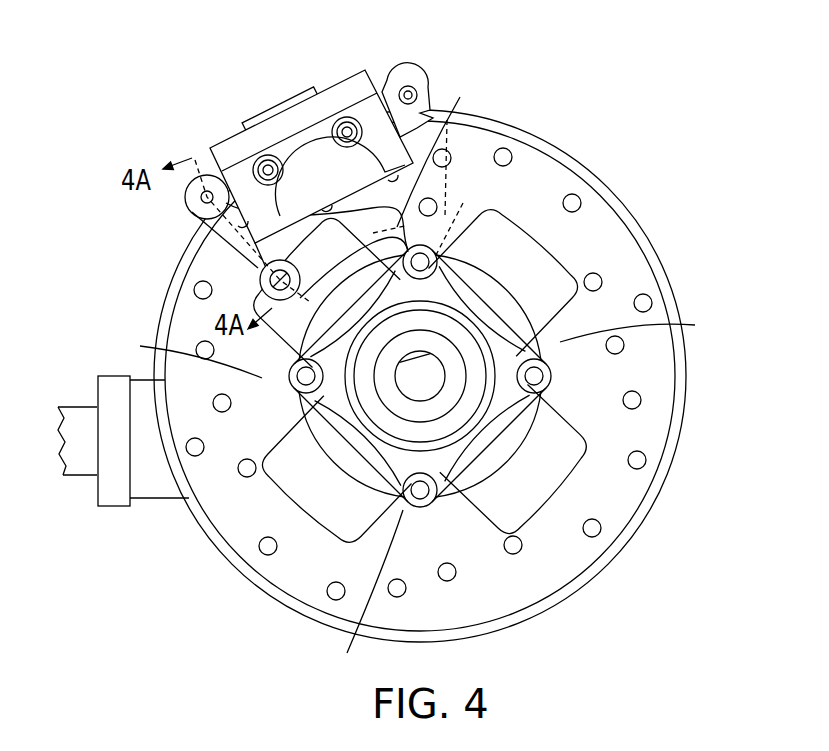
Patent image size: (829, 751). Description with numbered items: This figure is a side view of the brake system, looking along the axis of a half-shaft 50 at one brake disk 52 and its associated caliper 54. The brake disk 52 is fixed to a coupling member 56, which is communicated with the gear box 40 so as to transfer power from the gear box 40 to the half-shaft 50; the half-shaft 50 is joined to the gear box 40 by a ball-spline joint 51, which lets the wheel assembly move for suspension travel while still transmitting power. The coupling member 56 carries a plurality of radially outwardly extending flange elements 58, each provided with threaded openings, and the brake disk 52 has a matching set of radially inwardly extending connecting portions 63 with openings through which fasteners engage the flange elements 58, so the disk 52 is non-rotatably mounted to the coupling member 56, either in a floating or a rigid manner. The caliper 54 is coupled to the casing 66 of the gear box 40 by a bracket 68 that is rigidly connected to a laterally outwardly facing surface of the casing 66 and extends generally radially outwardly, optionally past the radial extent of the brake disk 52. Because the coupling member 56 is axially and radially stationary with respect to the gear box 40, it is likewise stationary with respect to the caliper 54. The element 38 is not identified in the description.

The swing arm / axle support 38 is at (83, 423).
The gear box 40 is at (573, 160).
The half-shaft 50 is at (413, 353).
The ball-spline joint 51 is at (450, 345).
The brake disk 52 is at (615, 495).
The brake caliper 54 is at (282, 122).
The coupling member 56 is at (457, 404).
The flange element 58 is at (446, 219).
The connecting portion 63 is at (418, 375).
The casing 66 is at (327, 500).
The bracket 68 is at (198, 208).